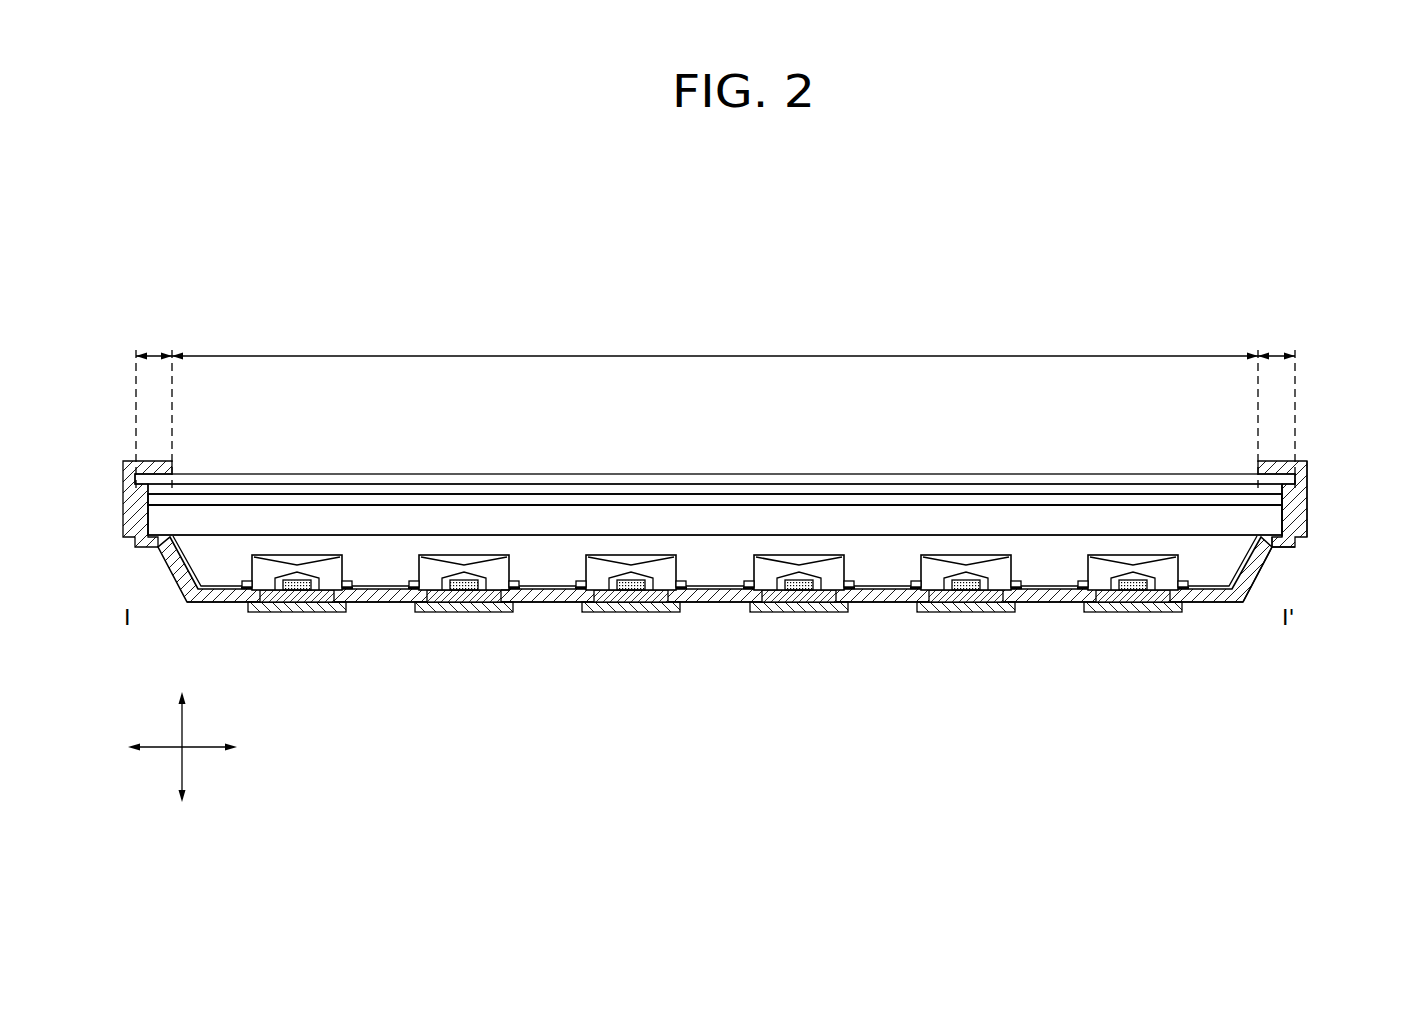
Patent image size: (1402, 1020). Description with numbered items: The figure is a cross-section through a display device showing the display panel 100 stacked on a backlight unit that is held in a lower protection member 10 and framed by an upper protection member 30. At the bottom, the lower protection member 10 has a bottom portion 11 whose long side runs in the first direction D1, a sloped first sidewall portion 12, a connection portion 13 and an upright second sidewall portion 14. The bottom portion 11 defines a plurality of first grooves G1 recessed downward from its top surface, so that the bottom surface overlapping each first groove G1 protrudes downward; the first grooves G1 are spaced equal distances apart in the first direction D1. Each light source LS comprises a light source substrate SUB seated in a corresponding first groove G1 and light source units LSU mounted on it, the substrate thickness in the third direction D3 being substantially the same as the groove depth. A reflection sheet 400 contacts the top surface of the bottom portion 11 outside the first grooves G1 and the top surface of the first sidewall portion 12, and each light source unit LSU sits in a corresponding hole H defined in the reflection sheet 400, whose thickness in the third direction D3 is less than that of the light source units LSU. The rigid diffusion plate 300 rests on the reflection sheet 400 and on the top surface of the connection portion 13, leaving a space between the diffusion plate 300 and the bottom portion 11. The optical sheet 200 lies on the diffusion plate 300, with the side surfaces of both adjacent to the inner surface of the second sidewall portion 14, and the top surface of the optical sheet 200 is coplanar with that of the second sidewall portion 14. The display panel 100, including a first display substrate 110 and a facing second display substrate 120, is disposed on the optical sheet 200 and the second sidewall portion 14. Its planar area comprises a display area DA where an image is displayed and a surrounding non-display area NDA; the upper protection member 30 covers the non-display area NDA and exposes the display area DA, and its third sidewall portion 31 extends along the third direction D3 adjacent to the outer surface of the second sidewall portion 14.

The lower protection member 10 is at (1256, 590).
The bottom portion 11 is at (1215, 597).
The first sidewall portion 12 is at (1252, 573).
The connection portion 13 is at (1278, 548).
The second sidewall portion 14 is at (1290, 528).
The upper protection member 30 is at (1300, 461).
The third sidewall portion 31 is at (1302, 480).
The display panel 100 is at (715, 430).
The first display substrate 110 is at (917, 404).
The second display substrate 120 is at (890, 478).
The optical sheet 200 is at (1275, 500).
The diffusion plate 300 is at (1275, 518).
The reflection sheet 400 is at (1048, 588).
The light source LS is at (446, 637).
The light source unit LSU is at (427, 568).
The light source substrate SUB is at (445, 594).
The first groove G1 is at (496, 596).
The hole H is at (512, 635).
The display area DA is at (715, 343).
The non-display area NDA is at (715, 409).
The first direction D1 is at (194, 750).
The third direction D3 is at (181, 736).